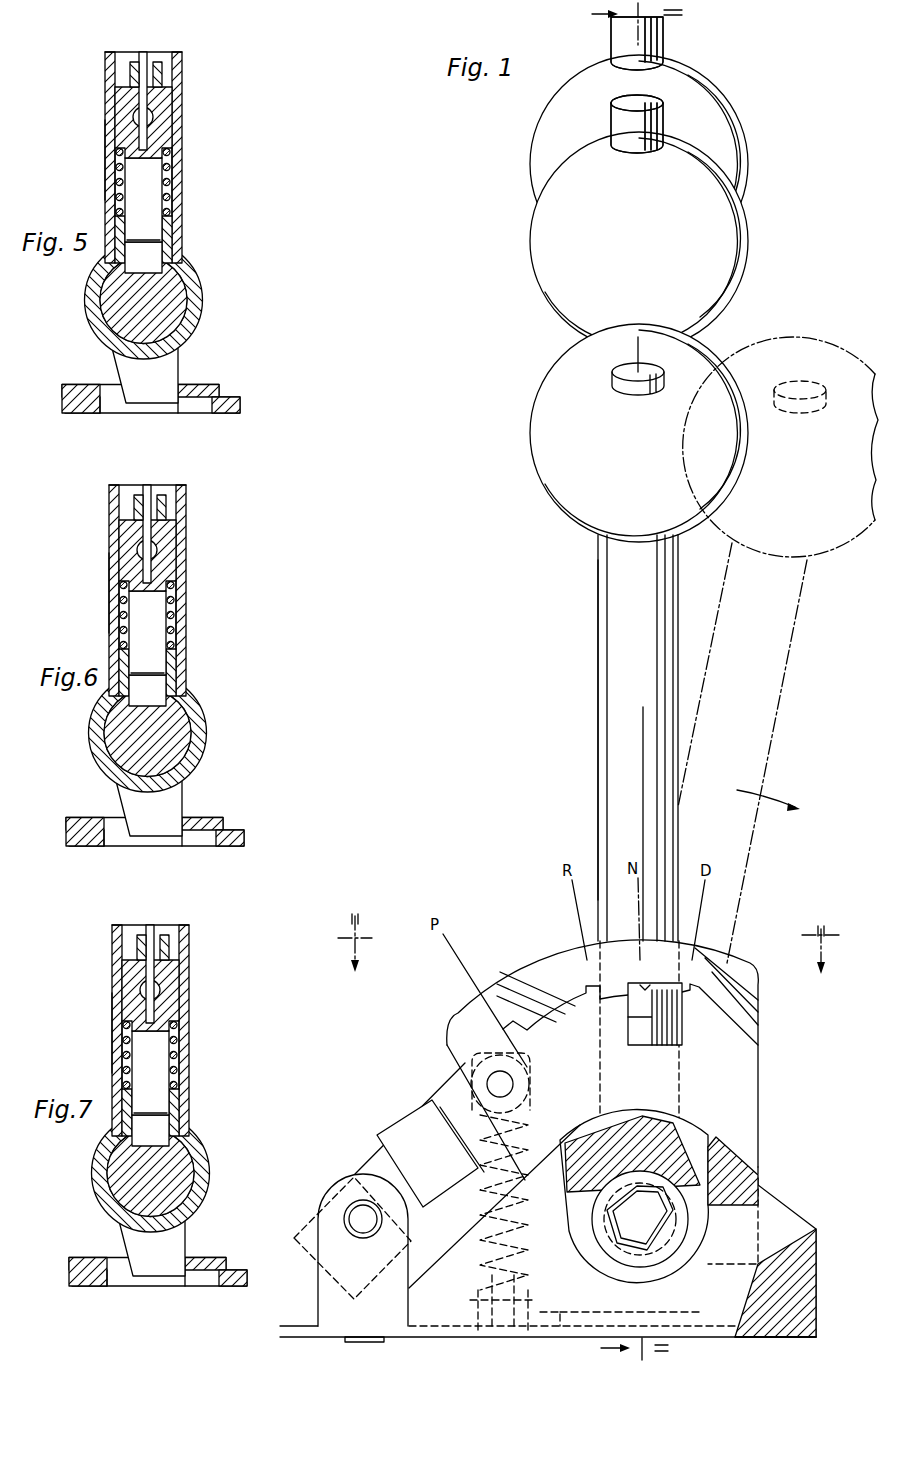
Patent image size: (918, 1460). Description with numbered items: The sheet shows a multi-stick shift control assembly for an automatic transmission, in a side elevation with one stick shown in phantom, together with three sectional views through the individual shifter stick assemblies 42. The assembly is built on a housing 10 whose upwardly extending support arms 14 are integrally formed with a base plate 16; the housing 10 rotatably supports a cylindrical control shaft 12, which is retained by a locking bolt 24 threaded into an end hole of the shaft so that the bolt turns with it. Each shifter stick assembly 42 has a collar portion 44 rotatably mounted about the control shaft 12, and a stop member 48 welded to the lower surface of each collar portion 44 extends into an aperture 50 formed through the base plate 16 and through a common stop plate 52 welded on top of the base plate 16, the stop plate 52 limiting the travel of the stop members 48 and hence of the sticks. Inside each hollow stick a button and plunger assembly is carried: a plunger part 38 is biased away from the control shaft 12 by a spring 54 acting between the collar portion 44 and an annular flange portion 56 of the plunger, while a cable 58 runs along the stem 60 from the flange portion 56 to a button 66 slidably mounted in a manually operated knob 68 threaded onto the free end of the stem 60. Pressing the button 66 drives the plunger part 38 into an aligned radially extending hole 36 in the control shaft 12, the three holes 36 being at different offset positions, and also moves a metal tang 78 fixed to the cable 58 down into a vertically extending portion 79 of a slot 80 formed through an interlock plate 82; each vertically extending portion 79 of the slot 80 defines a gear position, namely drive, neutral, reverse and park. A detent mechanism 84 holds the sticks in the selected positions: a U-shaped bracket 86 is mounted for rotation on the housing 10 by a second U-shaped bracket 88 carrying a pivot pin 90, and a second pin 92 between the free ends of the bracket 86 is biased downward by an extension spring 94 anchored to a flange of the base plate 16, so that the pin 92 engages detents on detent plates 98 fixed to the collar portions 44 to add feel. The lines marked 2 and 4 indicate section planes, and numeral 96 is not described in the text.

In FIG. 1, the section line 2- 2 is at (589, 957).
In FIG. 1, the section line 4- 4 is at (622, 681).
In FIG. 1, the housing 10 is at (782, 1186).
In FIG. 5, the control shaft 12 is at (178, 309).
In FIG. 6, the control shaft 12 is at (172, 733).
In FIG. 7, the control shaft 12 is at (179, 1173).
In FIG. 1, the support arms 14 is at (758, 1176).
In FIG. 5, the base plate 16 is at (228, 413).
In FIG. 6, the base plate 16 is at (157, 850).
In FIG. 7, the base plate 16 is at (158, 1292).
In FIG. 1, the base plate 16 is at (735, 1333).
In FIG. 1, the locking bolt 24 is at (667, 1222).
In FIG. 5, the radially extending hole 36 is at (148, 265).
In FIG. 6, the radially extending hole 36 is at (169, 725).
In FIG. 7, the radially extending hole 36 is at (172, 1160).
In FIG. 5, the plunger part 38 is at (158, 225).
In FIG. 6, the plunger part 38 is at (188, 642).
In FIG. 7, the plunger part 38 is at (192, 1073).
In FIG. 5, the shifter stick assembly 42 is at (102, 134).
In FIG. 6, the shifter stick assembly 42 is at (125, 590).
In FIG. 7, the shifter stick assembly 42 is at (130, 1030).
In FIG. 1, the shifter stick assembly 42 is at (598, 626).
In FIG. 5, the collar portion 44 is at (87, 319).
In FIG. 6, the collar portion 44 is at (131, 733).
In FIG. 7, the collar portion 44 is at (131, 1173).
In FIG. 5, the stop member 48 is at (163, 396).
In FIG. 6, the stop member 48 is at (151, 829).
In FIG. 7, the stop member 48 is at (157, 1271).
In FIG. 1, the stop member 48 is at (675, 1293).
In FIG. 5, the aperture 50 is at (118, 413).
In FIG. 6, the aperture 50 is at (143, 855).
In FIG. 7, the aperture 50 is at (146, 1297).
In FIG. 5, the stop plate 52 is at (82, 413).
In FIG. 6, the stop plate 52 is at (84, 850).
In FIG. 7, the stop plate 52 is at (86, 1292).
In FIG. 1, the stop plate 52 is at (549, 1330).
In FIG. 5, the spring 54 is at (170, 195).
In FIG. 6, the spring 54 is at (184, 615).
In FIG. 7, the spring 54 is at (188, 1052).
In FIG. 5, the annular flange portion 56 is at (172, 134).
In FIG. 6, the annular flange portion 56 is at (183, 558).
In FIG. 7, the annular flange portion 56 is at (125, 995).
In FIG. 5, the cable 58 is at (143, 100).
In FIG. 6, the cable 58 is at (192, 534).
In FIG. 7, the cable 58 is at (196, 974).
In FIG. 5, the stem 60 is at (107, 191).
In FIG. 6, the stem 60 is at (87, 598).
In FIG. 7, the stem 60 is at (90, 1033).
In FIG. 1, the stem 60 is at (598, 698).
In FIG. 1, the button 66 is at (665, 37).
In FIG. 1, the knob 68 is at (748, 150).
In FIG. 5, the tang 78 is at (160, 77).
In FIG. 6, the tang 78 is at (190, 509).
In FIG. 7, the tang 78 is at (195, 947).
In FIG. 1, the tang 78 is at (642, 992).
In FIG. 1, the vertically extending portion 79 is at (503, 1028).
In FIG. 1, the slot 80 is at (690, 1012).
In FIG. 1, the interlock plate 82 is at (759, 997).
In FIG. 1, the detent mechanism 84 is at (428, 1057).
In FIG. 1, the U-shaped bracket 86 is at (452, 1092).
In FIG. 1, the second U-shaped bracket 88 is at (307, 1241).
In FIG. 1, the pivot pin 90 is at (363, 1216).
In FIG. 1, the second pin 92 is at (530, 1090).
In FIG. 1, the extension spring 94 is at (502, 1325).
In FIG. 1, the spring guide 96 is at (511, 1317).
In FIG. 1, the detent plate 98 is at (481, 1148).